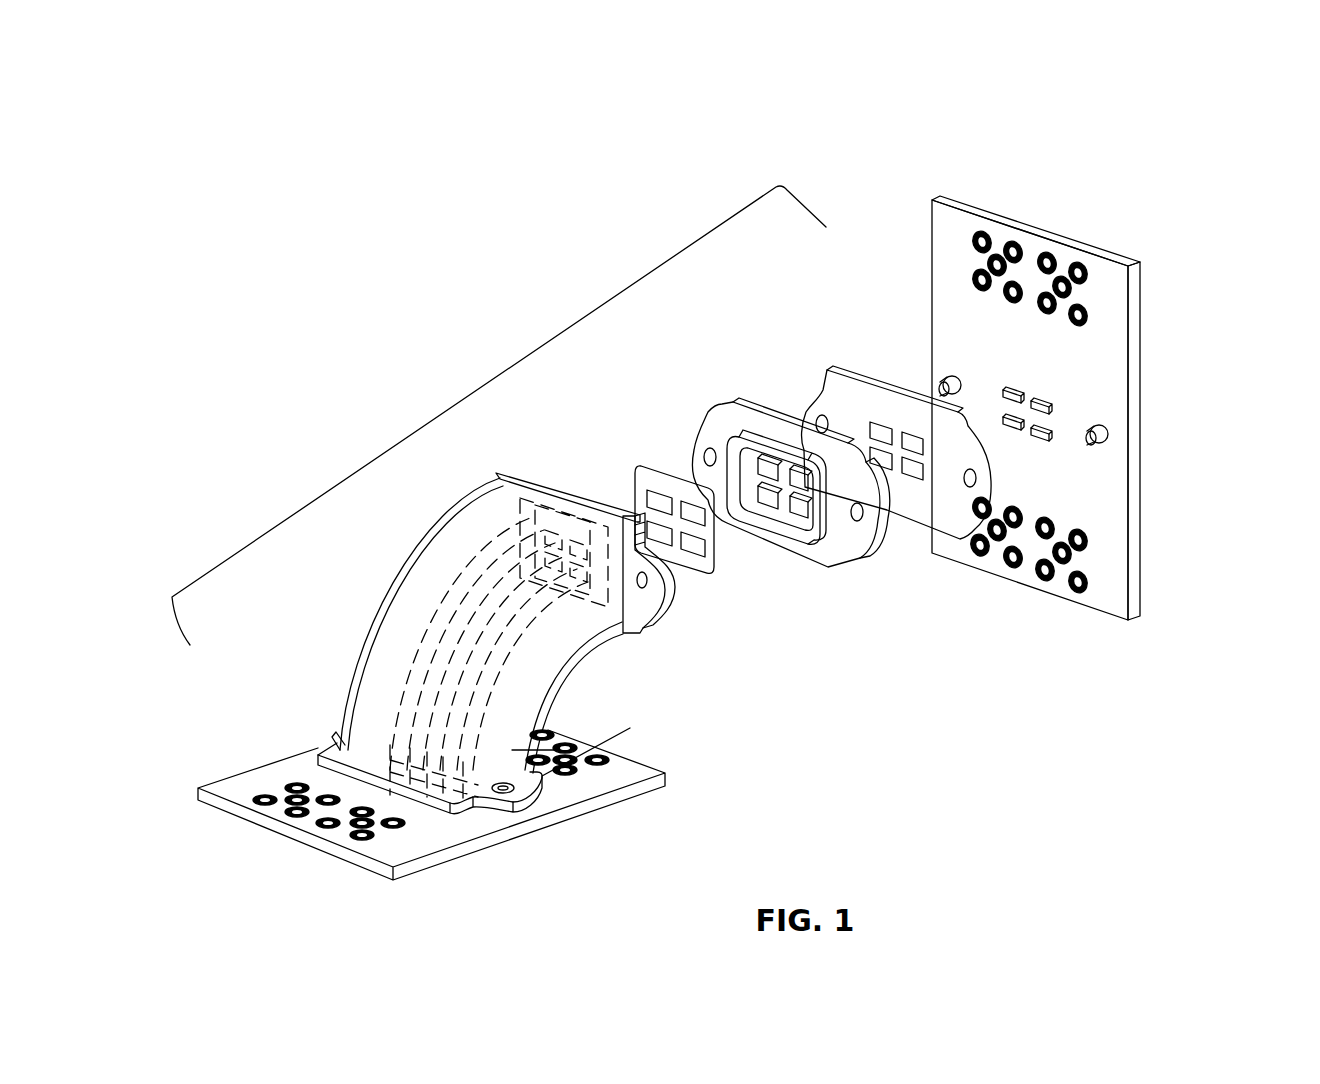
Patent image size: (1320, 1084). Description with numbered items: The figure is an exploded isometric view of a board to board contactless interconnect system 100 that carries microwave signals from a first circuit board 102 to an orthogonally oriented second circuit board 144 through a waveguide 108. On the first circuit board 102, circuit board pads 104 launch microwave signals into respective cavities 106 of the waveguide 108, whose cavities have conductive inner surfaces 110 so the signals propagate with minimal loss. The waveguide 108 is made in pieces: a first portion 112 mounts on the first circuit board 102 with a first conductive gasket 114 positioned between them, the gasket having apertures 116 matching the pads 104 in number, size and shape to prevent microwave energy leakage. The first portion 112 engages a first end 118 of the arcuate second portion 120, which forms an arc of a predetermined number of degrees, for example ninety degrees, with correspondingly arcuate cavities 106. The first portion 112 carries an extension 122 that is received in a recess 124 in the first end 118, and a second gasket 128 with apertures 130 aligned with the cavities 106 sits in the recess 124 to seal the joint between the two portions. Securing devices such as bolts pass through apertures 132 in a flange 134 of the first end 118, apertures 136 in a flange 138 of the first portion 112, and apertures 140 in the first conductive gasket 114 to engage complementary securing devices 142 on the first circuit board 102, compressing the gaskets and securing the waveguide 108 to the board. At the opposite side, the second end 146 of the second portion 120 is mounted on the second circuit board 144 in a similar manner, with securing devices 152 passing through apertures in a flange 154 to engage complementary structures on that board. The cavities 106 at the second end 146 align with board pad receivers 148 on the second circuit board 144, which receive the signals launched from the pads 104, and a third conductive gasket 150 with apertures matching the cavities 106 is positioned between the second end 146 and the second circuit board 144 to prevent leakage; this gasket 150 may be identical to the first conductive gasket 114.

The board to board contactless interconnect system 100 is at (1072, 124).
The first circuit board 102 is at (932, 292).
The circuit board pads 104 is at (1050, 401).
The cavities 106 is at (594, 527).
The waveguide 108 is at (484, 385).
The conductive inner surfaces 110 is at (770, 470).
The first portion of waveguide 112 is at (723, 401).
The first conductive gasket 114 is at (830, 368).
The apertures 116 is at (893, 510).
The first end of second portion 118 is at (550, 472).
The second portion of waveguide 120 is at (402, 586).
The extension 122 is at (857, 521).
The recess 124 is at (633, 637).
The second gasket 128 is at (650, 463).
The apertures 130 is at (691, 571).
The apertures 132 is at (652, 634).
The flange 134 is at (667, 588).
The apertures 136 is at (880, 520).
The flange 138 is at (890, 513).
The apertures 140 is at (983, 553).
The complementary securing devices 142 is at (1101, 446).
The second circuit board 144 is at (278, 773).
The second end of second portion 146 is at (588, 758).
The board pad receivers 148 is at (395, 745).
The third conductive gasket 150 is at (437, 815).
The securing devices 152 is at (546, 781).
The flange 154 is at (527, 791).